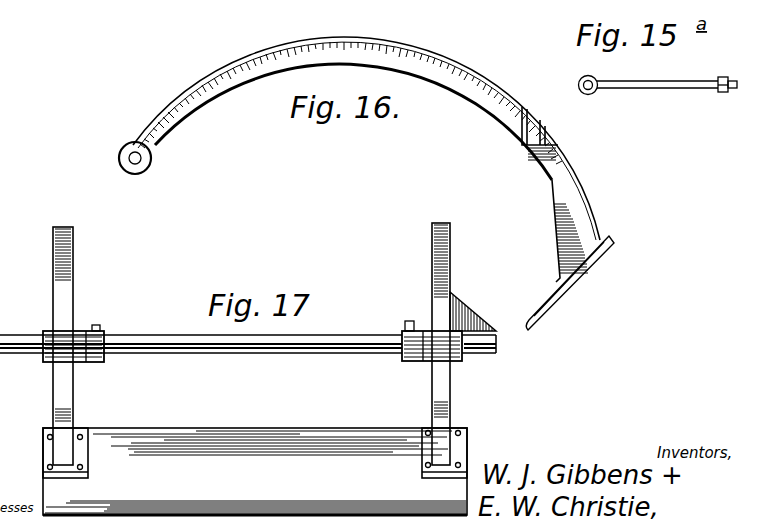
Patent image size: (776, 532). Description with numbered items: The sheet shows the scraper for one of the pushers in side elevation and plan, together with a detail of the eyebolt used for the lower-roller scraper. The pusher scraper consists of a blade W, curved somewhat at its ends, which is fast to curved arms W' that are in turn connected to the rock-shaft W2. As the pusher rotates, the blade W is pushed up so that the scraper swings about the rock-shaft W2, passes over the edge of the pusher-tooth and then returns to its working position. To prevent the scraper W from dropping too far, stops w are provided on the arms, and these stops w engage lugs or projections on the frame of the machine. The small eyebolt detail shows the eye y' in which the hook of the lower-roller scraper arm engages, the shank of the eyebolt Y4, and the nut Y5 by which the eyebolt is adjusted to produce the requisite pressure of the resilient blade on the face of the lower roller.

In FIG. 17, the blade W is at (255, 471).
In FIG. 16, the curved arm W' is at (373, 177).
In FIG. 17, the curved arm W' is at (251, 344).
In FIG. 16, the rock-shaft W2 is at (133, 155).
In FIG. 17, the rock-shaft W2 is at (20, 356).
In FIG. 16, the stop w is at (548, 141).
In FIG. 17, the stop w is at (473, 318).
In FIG. 15A, the eye y' is at (601, 76).
In FIG. 15A, the bolt shank Y4 is at (640, 88).
In FIG. 15A, the nut Y5 is at (712, 89).